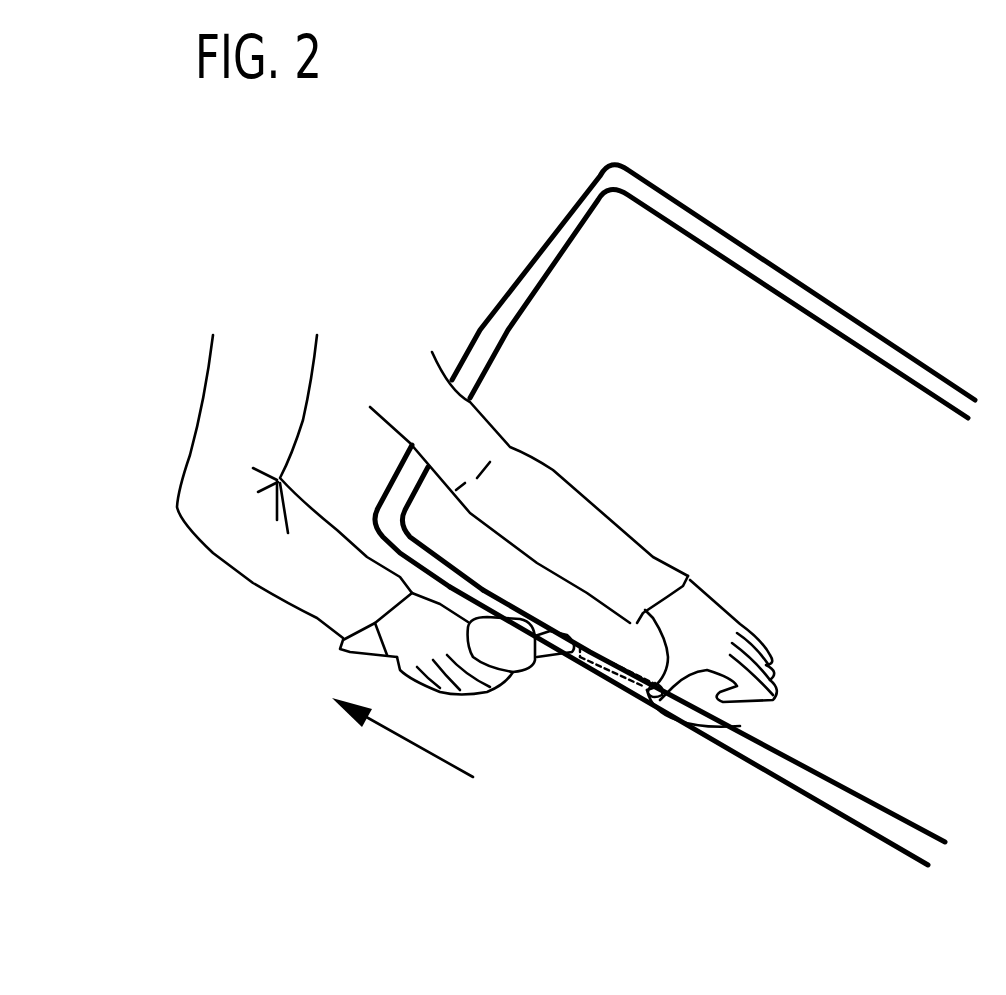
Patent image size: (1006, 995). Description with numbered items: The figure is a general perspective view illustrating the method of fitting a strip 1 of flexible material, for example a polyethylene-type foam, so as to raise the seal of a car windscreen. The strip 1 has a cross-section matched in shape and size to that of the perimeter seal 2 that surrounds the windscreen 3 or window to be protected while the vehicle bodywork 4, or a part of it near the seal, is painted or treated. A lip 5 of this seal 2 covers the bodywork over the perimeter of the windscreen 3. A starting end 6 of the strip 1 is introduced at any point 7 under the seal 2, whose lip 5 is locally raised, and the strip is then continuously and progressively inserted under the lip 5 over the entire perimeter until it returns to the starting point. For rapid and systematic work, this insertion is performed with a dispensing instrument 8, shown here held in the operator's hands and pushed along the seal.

The strip 1 is at (586, 685).
The perimeter seal 2 is at (641, 160).
The windscreen 3 is at (709, 340).
The vehicle bodywork 4 is at (818, 233).
The lip 5 is at (750, 757).
The starting end 6 is at (657, 703).
The point 7 is at (740, 726).
The dispensing instrument 8 is at (530, 685).